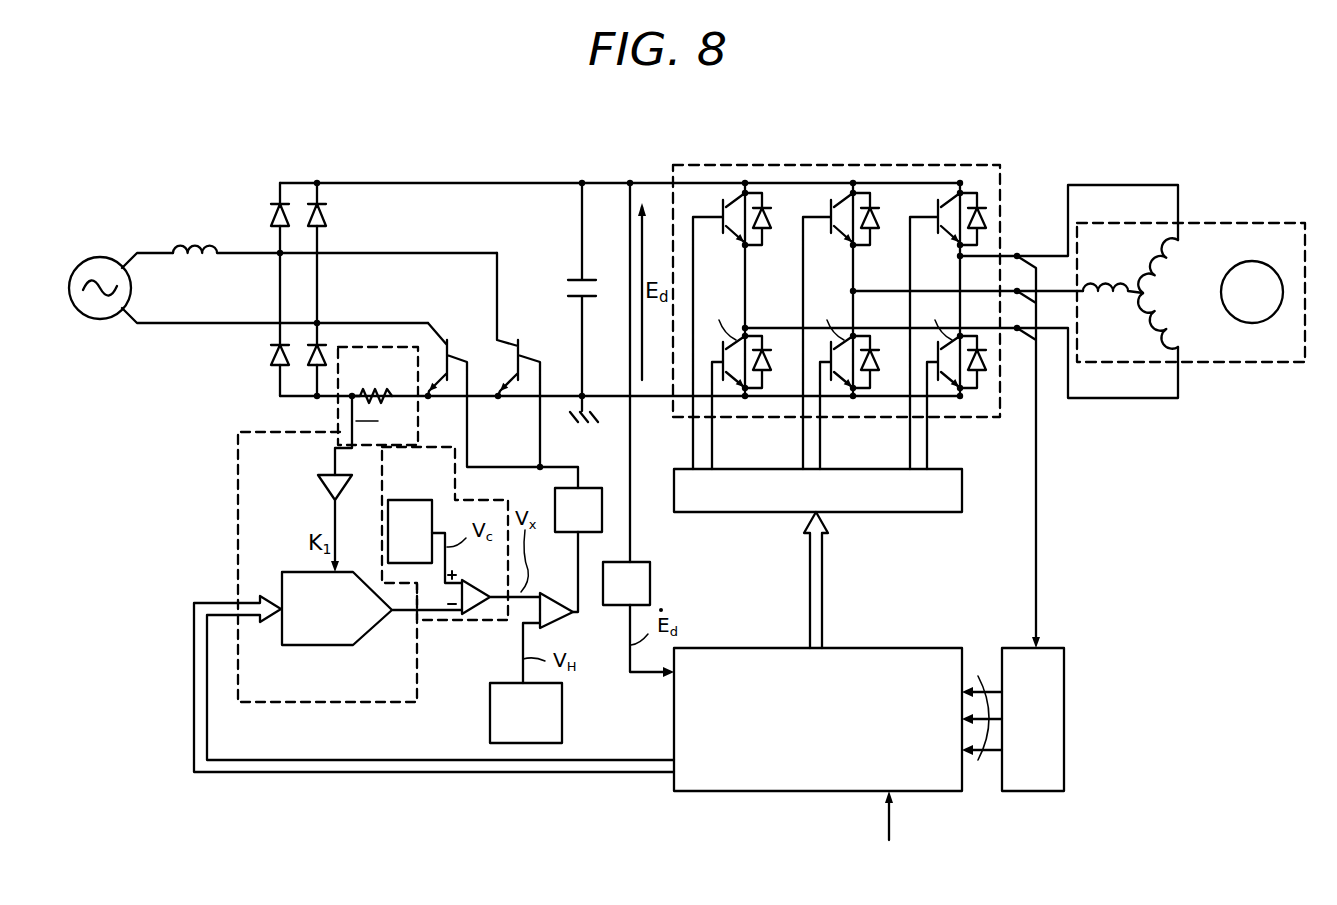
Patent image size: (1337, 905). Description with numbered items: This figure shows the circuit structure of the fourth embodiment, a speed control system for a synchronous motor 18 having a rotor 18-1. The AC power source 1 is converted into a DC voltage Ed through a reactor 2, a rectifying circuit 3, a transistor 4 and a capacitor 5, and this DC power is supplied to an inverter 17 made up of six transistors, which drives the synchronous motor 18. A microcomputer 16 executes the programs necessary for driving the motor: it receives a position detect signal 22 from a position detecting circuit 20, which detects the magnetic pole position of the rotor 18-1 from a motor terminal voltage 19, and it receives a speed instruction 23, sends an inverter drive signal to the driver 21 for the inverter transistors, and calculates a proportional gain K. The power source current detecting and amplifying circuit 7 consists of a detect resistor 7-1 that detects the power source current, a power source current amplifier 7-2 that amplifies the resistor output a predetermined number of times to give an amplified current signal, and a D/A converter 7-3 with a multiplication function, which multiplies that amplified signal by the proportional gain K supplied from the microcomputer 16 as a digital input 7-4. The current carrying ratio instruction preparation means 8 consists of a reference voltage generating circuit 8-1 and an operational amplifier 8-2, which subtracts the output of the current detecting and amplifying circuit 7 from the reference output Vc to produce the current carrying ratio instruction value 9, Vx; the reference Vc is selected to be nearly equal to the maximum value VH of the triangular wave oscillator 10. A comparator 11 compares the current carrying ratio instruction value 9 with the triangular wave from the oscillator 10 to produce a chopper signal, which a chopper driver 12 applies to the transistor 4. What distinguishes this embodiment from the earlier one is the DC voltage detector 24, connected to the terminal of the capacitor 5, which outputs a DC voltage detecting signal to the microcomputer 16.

The AC power source 1 is at (104, 260).
The reactor 2 is at (190, 240).
The rectifying circuit 3 is at (298, 178).
The transistor 4 is at (512, 338).
The capacitor 5 is at (597, 291).
The power source current detecting and amplifying circuit 7 is at (238, 508).
The detect resistor 7-1 is at (374, 388).
The power source current amplifier 7-2 is at (320, 484).
The D/A converter with a multiplication function 7-3 is at (316, 647).
The digital input 7-4 is at (194, 688).
The current carrying ratio instruction preparation means 8 is at (456, 480).
The reference voltage generating circuit 8-1 is at (411, 500).
The operational amplifier 8-2 is at (476, 614).
The current carrying ratio instruction value 9 is at (535, 592).
The triangular wave oscillator 10 is at (562, 704).
The comparator 11 is at (562, 620).
The chopper driver 12 is at (590, 487).
The microcomputer 16 is at (742, 648).
The inverter 17 is at (844, 163).
The synchronous motor 18 is at (1161, 285).
The rotor 18-1 is at (1222, 305).
The motor terminal voltage 19 is at (1036, 471).
The position detecting circuit 20 is at (1064, 700).
The driver 21 is at (906, 512).
The position detect signal 22 is at (978, 760).
The speed instruction 23 is at (890, 831).
The DC voltage detector 24 is at (651, 572).